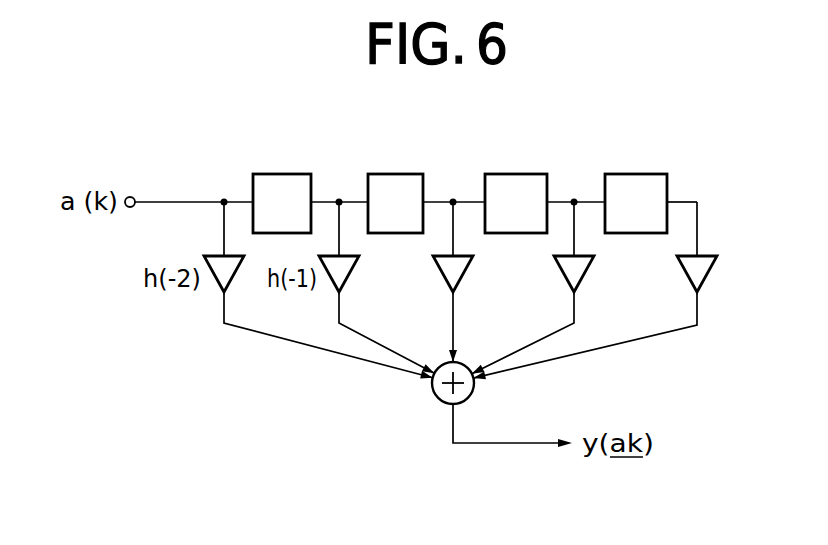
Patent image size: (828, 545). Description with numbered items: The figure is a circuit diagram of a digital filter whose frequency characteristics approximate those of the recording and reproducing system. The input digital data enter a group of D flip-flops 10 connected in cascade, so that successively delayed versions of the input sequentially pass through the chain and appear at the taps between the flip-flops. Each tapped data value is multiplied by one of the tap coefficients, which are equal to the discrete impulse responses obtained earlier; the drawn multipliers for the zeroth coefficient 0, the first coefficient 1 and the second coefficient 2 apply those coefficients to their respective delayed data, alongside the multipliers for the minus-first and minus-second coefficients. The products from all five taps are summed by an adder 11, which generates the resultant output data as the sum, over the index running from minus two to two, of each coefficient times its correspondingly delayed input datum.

The group of D flip-flops 10 is at (668, 156).
The adder 11 is at (433, 397).
The tap weight multiplier h 0 is at (429, 274).
The tap weight multiplier h 1 is at (550, 274).
The tap weight multiplier h 2 is at (671, 274).